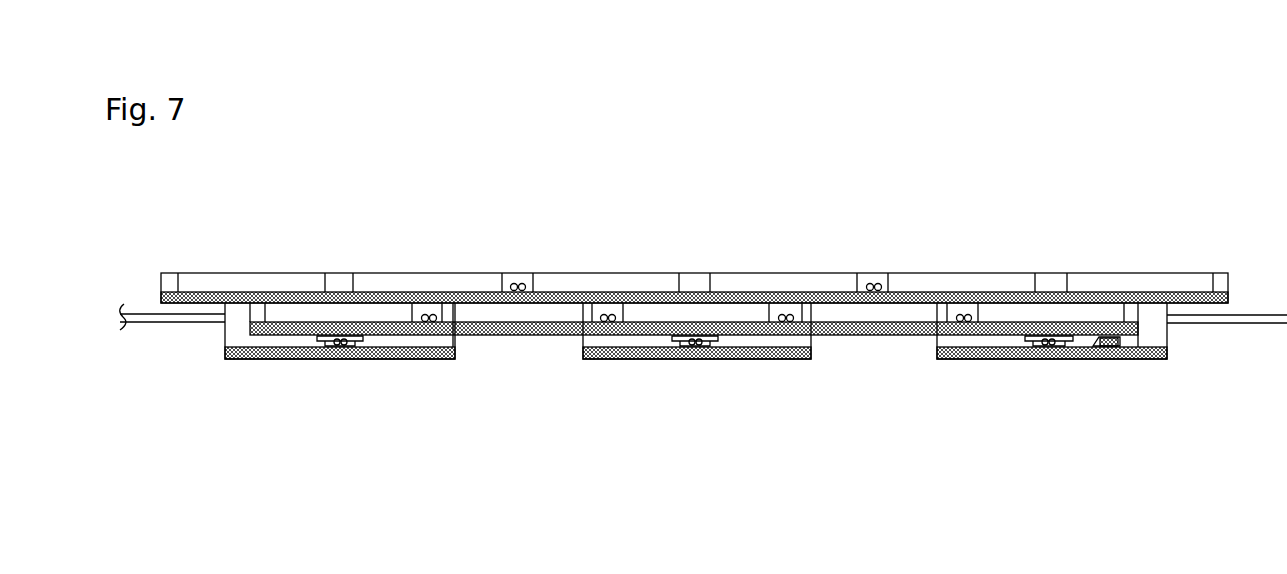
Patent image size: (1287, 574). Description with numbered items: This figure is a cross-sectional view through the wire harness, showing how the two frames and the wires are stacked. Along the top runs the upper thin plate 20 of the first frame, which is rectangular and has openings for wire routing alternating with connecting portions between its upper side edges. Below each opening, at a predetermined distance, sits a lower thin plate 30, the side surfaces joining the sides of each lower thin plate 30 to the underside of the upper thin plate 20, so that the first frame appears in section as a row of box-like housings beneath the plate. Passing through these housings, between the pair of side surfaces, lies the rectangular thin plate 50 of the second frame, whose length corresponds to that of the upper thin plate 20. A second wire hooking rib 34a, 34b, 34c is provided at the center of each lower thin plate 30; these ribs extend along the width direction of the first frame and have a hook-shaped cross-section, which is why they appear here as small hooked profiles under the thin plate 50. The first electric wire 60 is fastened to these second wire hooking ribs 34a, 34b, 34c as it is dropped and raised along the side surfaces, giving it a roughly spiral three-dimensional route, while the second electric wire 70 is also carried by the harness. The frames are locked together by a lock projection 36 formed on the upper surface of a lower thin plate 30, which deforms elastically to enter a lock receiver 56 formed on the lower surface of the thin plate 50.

The upper thin plate 20 is at (1190, 290).
The lower thin plate 30 is at (410, 355).
The second wire hooking rib 34a is at (1025, 337).
The second wire hooking rib 34b is at (672, 338).
The second wire hooking rib 34c is at (313, 338).
The lock projection 36 is at (1095, 342).
The thin plate 50 is at (877, 335).
The lock receiver 56 is at (1123, 347).
The first electric wire 60 is at (517, 273).
The second electric wire 70 is at (428, 314).